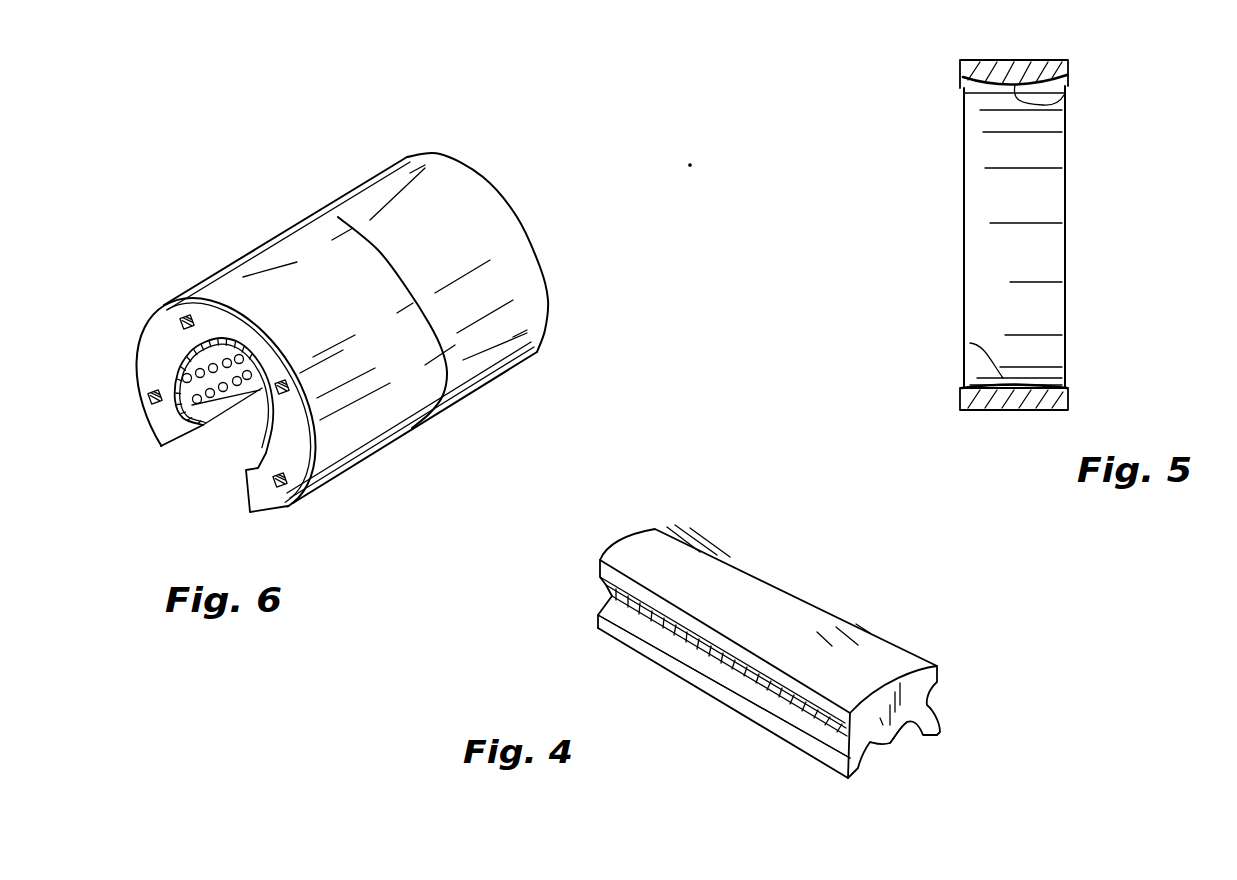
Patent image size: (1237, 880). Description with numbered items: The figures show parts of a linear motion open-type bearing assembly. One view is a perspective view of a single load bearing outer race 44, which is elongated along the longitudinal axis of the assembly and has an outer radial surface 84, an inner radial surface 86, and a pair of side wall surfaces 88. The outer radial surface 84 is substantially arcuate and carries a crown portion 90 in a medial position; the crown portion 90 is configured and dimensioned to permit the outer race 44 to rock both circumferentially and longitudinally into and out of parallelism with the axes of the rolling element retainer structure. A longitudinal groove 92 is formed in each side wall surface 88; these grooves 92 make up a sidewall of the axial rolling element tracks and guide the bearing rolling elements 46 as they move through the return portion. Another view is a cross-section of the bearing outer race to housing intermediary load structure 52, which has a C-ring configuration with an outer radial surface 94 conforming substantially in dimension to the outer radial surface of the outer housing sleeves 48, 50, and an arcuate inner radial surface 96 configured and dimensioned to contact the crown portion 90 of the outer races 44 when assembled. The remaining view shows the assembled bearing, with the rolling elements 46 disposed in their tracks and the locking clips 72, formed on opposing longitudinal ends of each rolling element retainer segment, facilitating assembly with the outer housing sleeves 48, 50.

In FIG. 4, the load bearing outer race 44 is at (928, 652).
In FIG. 6, the bearing rolling elements 46 is at (200, 428).
In FIG. 6, the outer housing sleeve 48 is at (400, 178).
In FIG. 6, the outer housing sleeve 50 is at (247, 266).
In FIG. 6, the bearing outer race to housing intermediary load structure 52 is at (322, 228).
In FIG. 5, the bearing outer race to housing intermediary load structure 52 is at (1070, 230).
In FIG. 6, the locking clips 72 is at (176, 325).
In FIG. 4, the outer radial surface 84 is at (690, 550).
In FIG. 4, the inner radial surface 86 is at (880, 748).
In FIG. 4, the side wall surfaces 88 is at (693, 682).
In FIG. 4, the crown portion 90 is at (802, 565).
In FIG. 4, the longitudinal groove 92 is at (633, 615).
In FIG. 5, the outer radial surface 94 is at (982, 58).
In FIG. 5, the inner radial surface 96 is at (1067, 108).